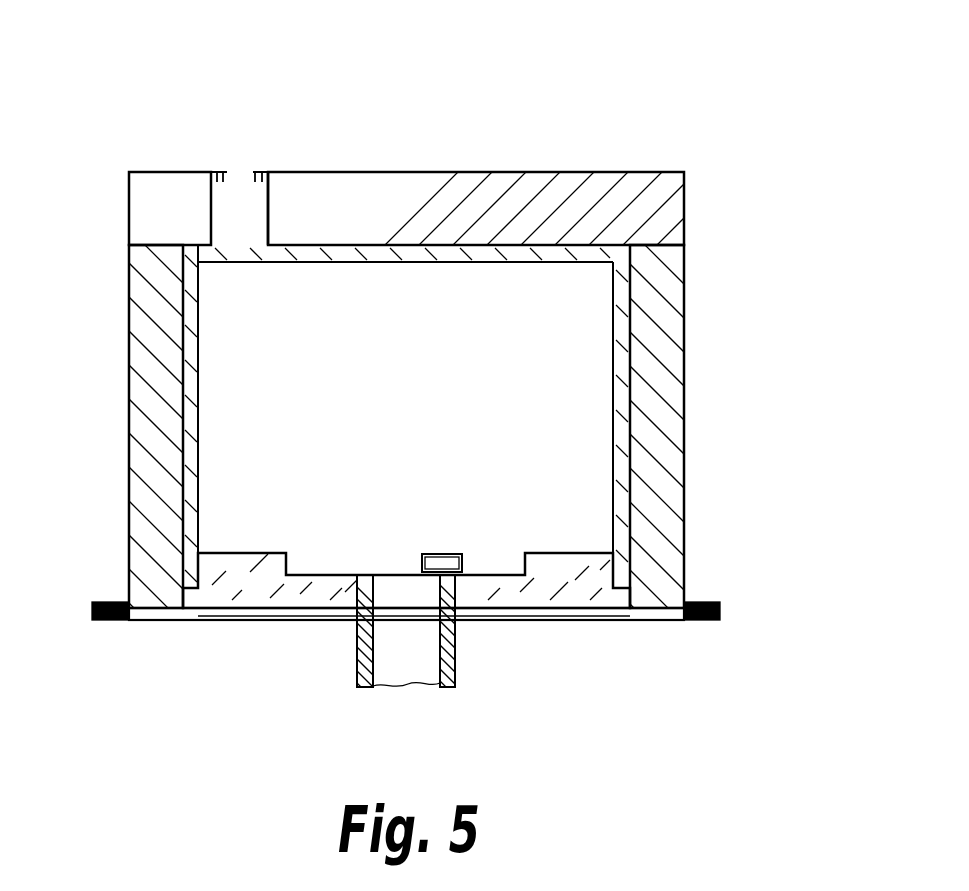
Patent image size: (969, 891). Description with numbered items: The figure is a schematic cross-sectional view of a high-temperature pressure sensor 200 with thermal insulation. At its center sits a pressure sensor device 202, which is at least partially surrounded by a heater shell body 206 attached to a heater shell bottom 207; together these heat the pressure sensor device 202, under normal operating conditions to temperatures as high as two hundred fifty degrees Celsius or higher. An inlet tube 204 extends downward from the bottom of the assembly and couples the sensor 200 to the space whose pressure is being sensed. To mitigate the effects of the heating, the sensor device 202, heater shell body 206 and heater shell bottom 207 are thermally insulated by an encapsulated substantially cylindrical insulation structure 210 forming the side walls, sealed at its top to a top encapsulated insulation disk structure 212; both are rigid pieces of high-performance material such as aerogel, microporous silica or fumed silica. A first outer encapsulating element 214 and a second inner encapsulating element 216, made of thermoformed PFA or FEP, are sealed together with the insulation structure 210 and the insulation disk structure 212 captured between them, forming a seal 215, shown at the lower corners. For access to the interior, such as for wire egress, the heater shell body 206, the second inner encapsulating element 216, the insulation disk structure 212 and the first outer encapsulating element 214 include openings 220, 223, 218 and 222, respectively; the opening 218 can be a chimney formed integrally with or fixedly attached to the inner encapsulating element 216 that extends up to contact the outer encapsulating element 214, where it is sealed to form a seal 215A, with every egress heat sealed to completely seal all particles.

The high-temperature pressure sensor 200 is at (674, 134).
The pressure sensor device 202 is at (533, 408).
The inlet tube 204 is at (455, 668).
The heater shell body 206 is at (190, 378).
The heater shell bottom 207 is at (270, 590).
The encapsulated substantially cylindrical insulation structure 210 is at (660, 480).
The top encapsulated insulation disk structure 212 is at (443, 215).
The first outer encapsulating element 214 is at (168, 170).
The seal 215 is at (700, 628).
The seal 215A is at (216, 170).
The second inner encapsulating element 216 is at (630, 280).
The opening 218 is at (266, 202).
The opening 220 is at (252, 262).
The opening 222 is at (224, 178).
The opening 223 is at (268, 243).